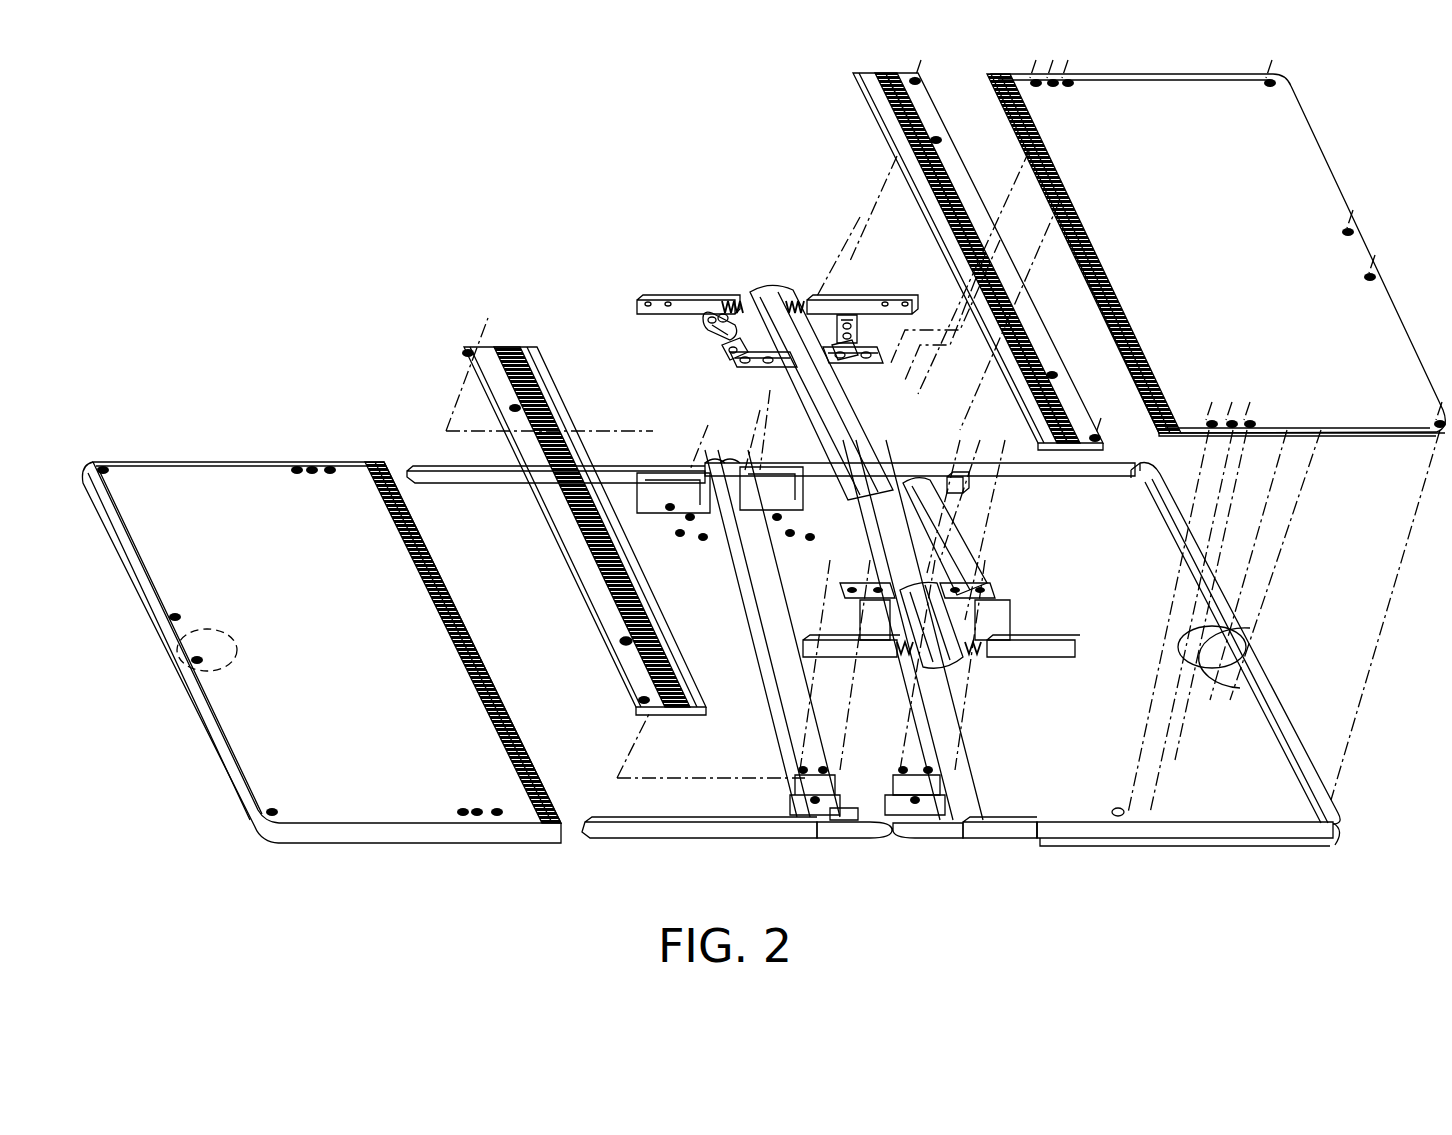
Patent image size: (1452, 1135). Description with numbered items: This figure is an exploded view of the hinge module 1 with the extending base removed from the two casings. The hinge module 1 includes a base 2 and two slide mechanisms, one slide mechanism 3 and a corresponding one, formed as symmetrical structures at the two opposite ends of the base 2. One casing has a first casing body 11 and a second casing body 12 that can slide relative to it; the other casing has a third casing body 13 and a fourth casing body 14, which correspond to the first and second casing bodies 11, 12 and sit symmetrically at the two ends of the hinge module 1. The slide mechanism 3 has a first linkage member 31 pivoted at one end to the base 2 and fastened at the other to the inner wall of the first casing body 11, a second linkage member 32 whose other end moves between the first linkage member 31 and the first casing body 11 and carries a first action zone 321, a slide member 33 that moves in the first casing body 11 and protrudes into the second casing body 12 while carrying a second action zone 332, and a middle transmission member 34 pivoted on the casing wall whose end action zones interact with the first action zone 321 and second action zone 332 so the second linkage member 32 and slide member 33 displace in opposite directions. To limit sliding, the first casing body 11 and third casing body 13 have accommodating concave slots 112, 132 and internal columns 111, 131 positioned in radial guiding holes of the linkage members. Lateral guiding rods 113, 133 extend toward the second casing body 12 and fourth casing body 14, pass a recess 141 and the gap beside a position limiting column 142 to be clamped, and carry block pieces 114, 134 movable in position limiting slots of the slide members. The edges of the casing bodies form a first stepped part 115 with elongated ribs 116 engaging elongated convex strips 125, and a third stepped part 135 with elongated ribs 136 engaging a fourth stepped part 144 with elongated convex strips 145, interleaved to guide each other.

The hinge module 1 is at (400, 245).
The base 2 is at (758, 270).
The slide mechanism 3 is at (578, 268).
The first casing body 11 is at (783, 730).
The second casing body 12 is at (206, 742).
The third casing body 13 is at (868, 90).
The fourth casing body 14 is at (1290, 165).
The first linkage member 31 is at (762, 372).
The second linkage member 32 is at (724, 348).
The slide member 33 is at (640, 302).
The middle transmission member 34 is at (706, 331).
The internal column 111 is at (876, 828).
The accommodating concave slot 112 is at (840, 816).
The lateral guiding rod 113 is at (420, 466).
The block piece 114 is at (792, 818).
The first stepped part 115 is at (618, 648).
The elongated ribs 116 is at (603, 606).
The elongated convex strips 125 is at (440, 592).
The internal column 131 is at (918, 812).
The accommodating concave slot 132 is at (947, 800).
The lateral guiding rod 133 is at (1025, 812).
The block piece 134 is at (982, 815).
The third stepped part 135 is at (977, 258).
The elongated ribs 136 is at (882, 80).
The recess 141 is at (905, 463).
The position limiting column 142 is at (957, 472).
The fourth stepped part 144 is at (1190, 432).
The elongated convex strips 145 is at (1000, 88).
The first action zone 321 is at (730, 353).
The second action zone 332 is at (720, 313).